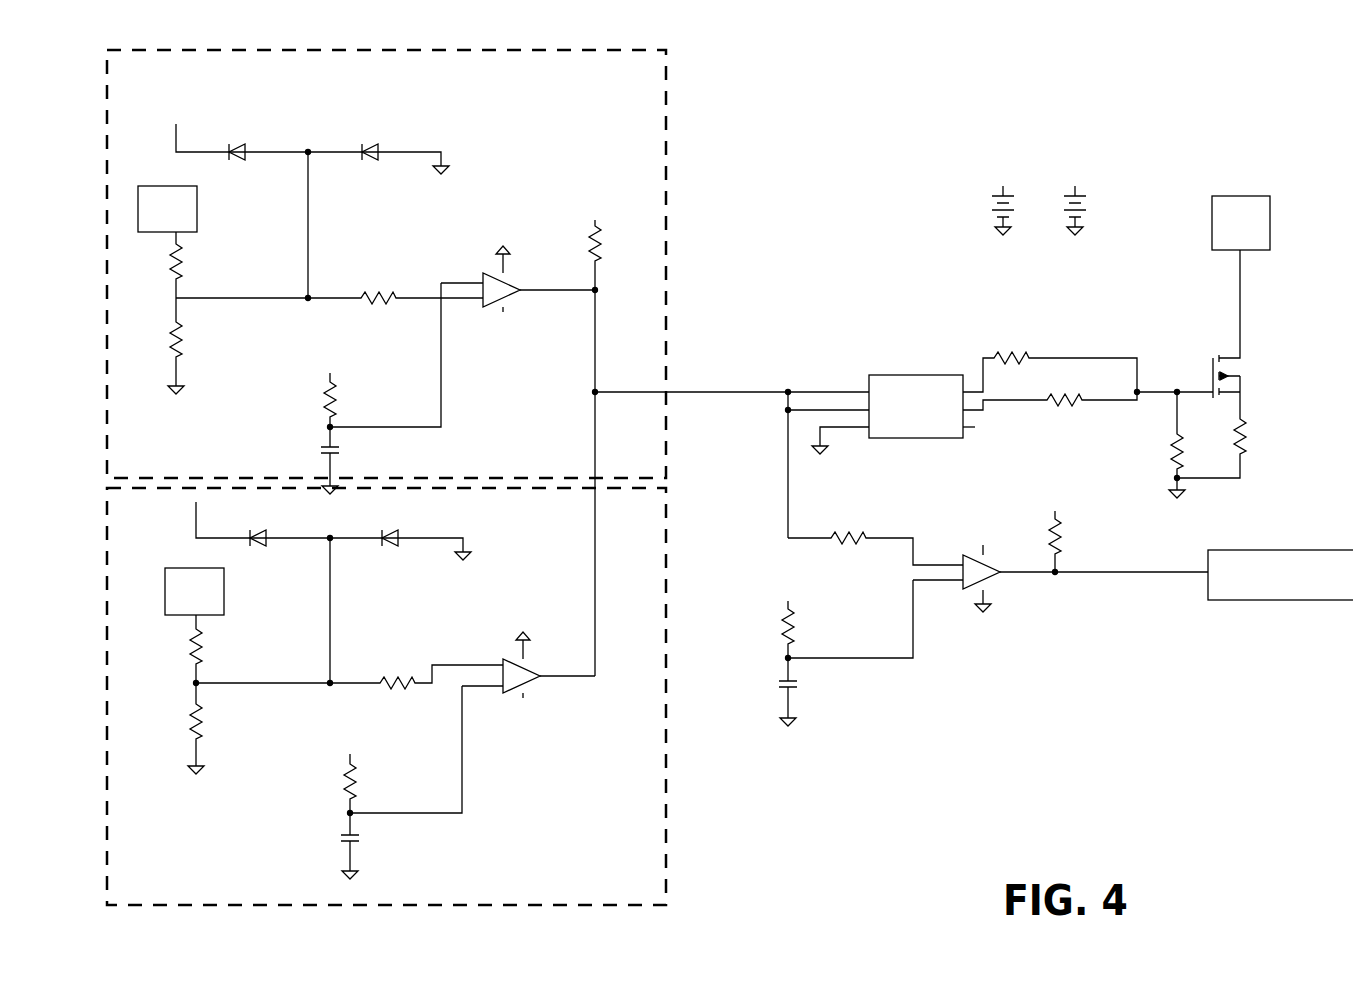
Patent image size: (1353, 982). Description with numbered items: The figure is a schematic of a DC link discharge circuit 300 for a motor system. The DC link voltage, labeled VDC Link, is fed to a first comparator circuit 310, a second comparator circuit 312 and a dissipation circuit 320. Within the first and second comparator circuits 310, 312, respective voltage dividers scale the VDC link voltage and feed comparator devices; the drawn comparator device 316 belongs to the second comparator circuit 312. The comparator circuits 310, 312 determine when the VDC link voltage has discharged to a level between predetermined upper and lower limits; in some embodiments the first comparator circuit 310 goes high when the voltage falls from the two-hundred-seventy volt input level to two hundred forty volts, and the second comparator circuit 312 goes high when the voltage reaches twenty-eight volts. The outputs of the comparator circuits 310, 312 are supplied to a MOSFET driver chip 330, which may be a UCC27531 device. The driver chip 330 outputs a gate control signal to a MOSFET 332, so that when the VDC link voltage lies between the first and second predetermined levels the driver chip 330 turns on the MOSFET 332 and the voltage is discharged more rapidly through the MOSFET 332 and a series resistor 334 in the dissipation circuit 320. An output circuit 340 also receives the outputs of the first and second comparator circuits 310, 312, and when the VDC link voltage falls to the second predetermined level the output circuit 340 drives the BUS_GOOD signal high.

The DC link discharge circuit 300 is at (840, 42).
The first comparator circuit 310 is at (642, 272).
The second comparator circuit 312 is at (632, 748).
The comparator device 316 is at (503, 660).
The dissipation circuit 320 is at (1188, 322).
The MOSFET driver chip 330 is at (907, 403).
The MOSFET 332 is at (1257, 350).
The resistor 334 is at (1248, 448).
The output circuit 340 is at (958, 665).